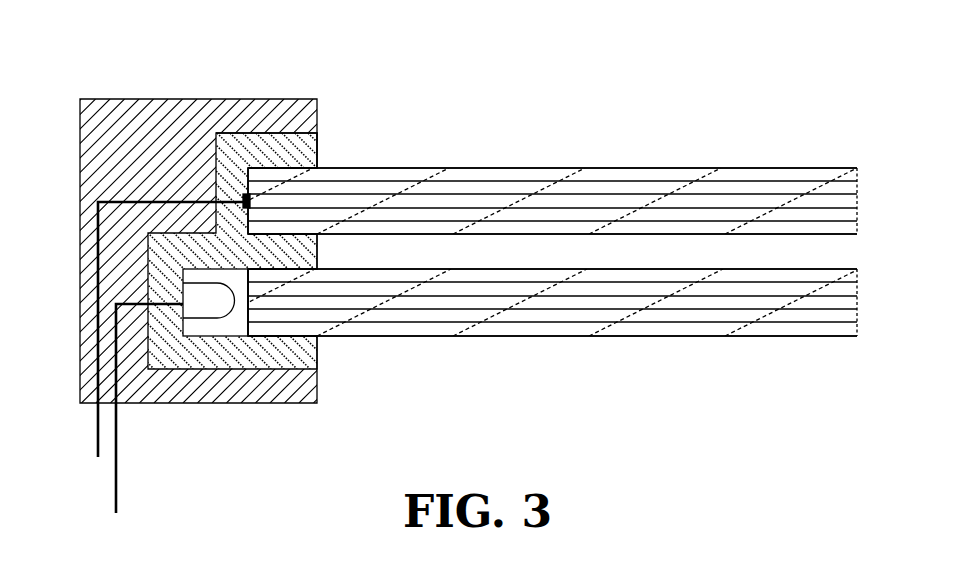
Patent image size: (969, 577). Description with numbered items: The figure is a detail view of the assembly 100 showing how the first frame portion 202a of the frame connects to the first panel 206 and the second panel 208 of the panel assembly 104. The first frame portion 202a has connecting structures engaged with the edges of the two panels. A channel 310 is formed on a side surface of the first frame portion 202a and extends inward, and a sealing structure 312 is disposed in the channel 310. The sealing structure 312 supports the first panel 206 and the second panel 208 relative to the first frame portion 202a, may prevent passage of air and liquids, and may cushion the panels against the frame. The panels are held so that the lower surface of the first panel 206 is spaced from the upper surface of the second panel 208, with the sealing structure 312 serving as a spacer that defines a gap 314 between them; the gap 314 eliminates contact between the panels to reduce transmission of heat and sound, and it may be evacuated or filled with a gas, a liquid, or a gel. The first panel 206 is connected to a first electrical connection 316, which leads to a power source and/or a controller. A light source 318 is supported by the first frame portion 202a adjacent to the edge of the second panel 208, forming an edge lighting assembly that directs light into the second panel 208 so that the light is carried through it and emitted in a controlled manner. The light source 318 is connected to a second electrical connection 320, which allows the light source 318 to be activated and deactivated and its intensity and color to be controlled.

The assembly 100 is at (98, 44).
The panel assembly 104 is at (568, 150).
The first frame portion 202a is at (117, 99).
The first panel 206 is at (775, 168).
The second panel 208 is at (775, 336).
The channel 310 is at (227, 133).
The sealing structure 312 is at (267, 147).
The gap 314 is at (848, 249).
The first electrical connection 316 is at (98, 439).
The light source 318 is at (208, 318).
The second electrical connection 320 is at (116, 494).